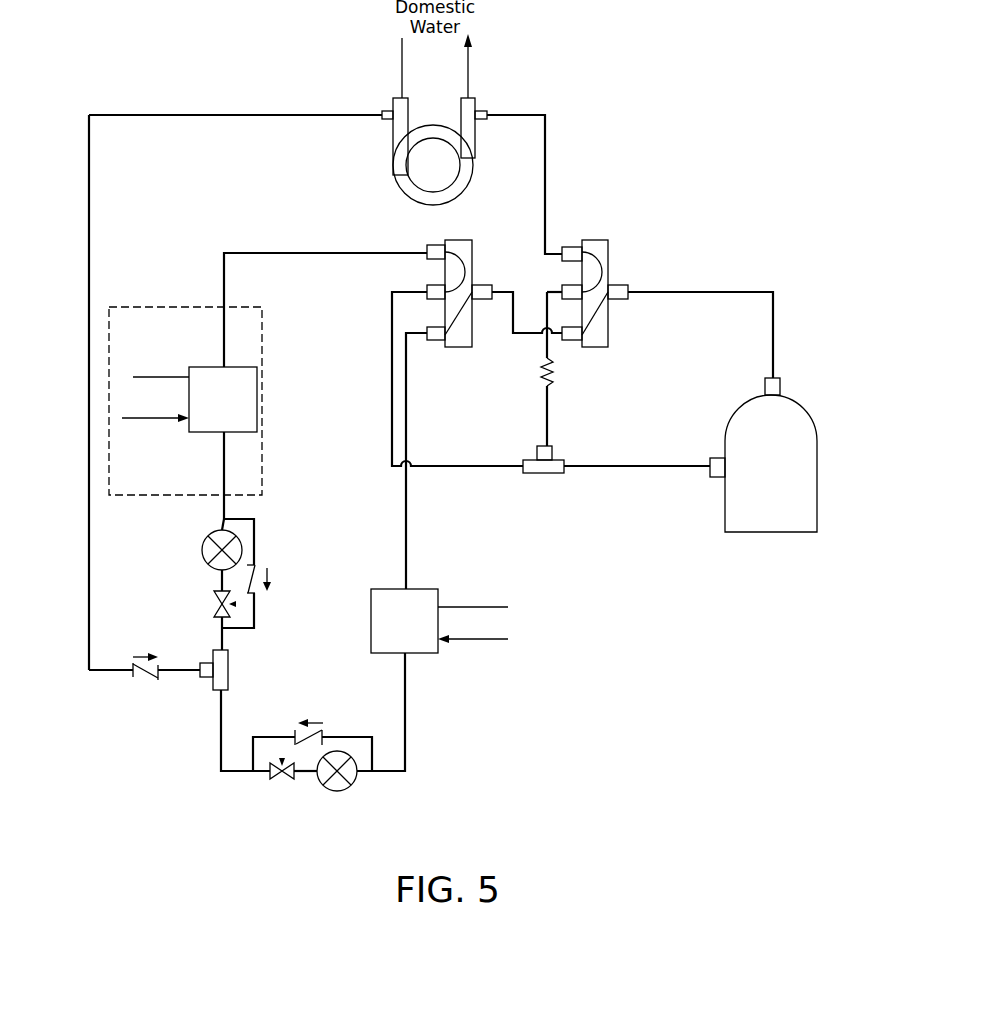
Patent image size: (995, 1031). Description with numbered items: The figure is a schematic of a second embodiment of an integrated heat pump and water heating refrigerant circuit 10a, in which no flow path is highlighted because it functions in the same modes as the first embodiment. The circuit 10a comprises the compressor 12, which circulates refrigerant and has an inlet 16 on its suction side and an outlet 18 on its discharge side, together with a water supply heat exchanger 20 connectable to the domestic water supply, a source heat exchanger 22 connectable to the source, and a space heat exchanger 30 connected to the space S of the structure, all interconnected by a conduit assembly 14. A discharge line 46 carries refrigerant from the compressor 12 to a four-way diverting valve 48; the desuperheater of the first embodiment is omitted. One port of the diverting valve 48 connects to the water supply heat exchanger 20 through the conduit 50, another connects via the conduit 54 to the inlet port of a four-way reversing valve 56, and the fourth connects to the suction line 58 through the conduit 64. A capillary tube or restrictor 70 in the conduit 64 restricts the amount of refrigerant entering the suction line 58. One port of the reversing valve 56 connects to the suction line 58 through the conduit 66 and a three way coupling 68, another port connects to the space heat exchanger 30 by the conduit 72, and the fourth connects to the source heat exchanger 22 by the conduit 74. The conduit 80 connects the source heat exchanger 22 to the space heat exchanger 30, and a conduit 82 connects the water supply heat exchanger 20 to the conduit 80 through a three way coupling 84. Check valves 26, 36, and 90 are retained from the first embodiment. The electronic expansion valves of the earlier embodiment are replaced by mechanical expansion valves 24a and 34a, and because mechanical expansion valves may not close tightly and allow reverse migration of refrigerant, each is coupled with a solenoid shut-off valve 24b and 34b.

The refrigerant circuit 10a is at (708, 725).
The compressor 12 is at (817, 472).
The conduit assembly 14 is at (238, 115).
The inlet 16 is at (717, 479).
The outlet 18 is at (780, 387).
The water supply heat exchanger 20 is at (393, 175).
The source heat exchanger 22 is at (371, 623).
The mechanical expansion valve 24a is at (337, 791).
The solenoid shut-off valve 24b is at (282, 780).
The check valve 26 is at (323, 731).
The space heat exchanger 30 is at (257, 402).
The mechanical expansion valve 34a is at (202, 550).
The solenoid shut-off valve 34b is at (213, 604).
The check valve 36 is at (258, 563).
The discharge line 46 is at (773, 338).
The diverting valve 48 is at (595, 240).
The conduit 50 is at (545, 163).
The conduit 54 is at (513, 347).
The reversing valve 56 is at (473, 240).
The suction line 58 is at (633, 466).
The conduit 64 is at (547, 419).
The conduit 66 is at (459, 466).
The three way coupling 68 is at (545, 473).
The restrictor 70 is at (553, 373).
The conduit 72 is at (290, 253).
The conduit 74 is at (406, 509).
The conduit 80 is at (219, 750).
The conduit 82 is at (89, 561).
The three way coupling 84 is at (228, 670).
The check valve 90 is at (145, 681).
The space S is at (158, 307).